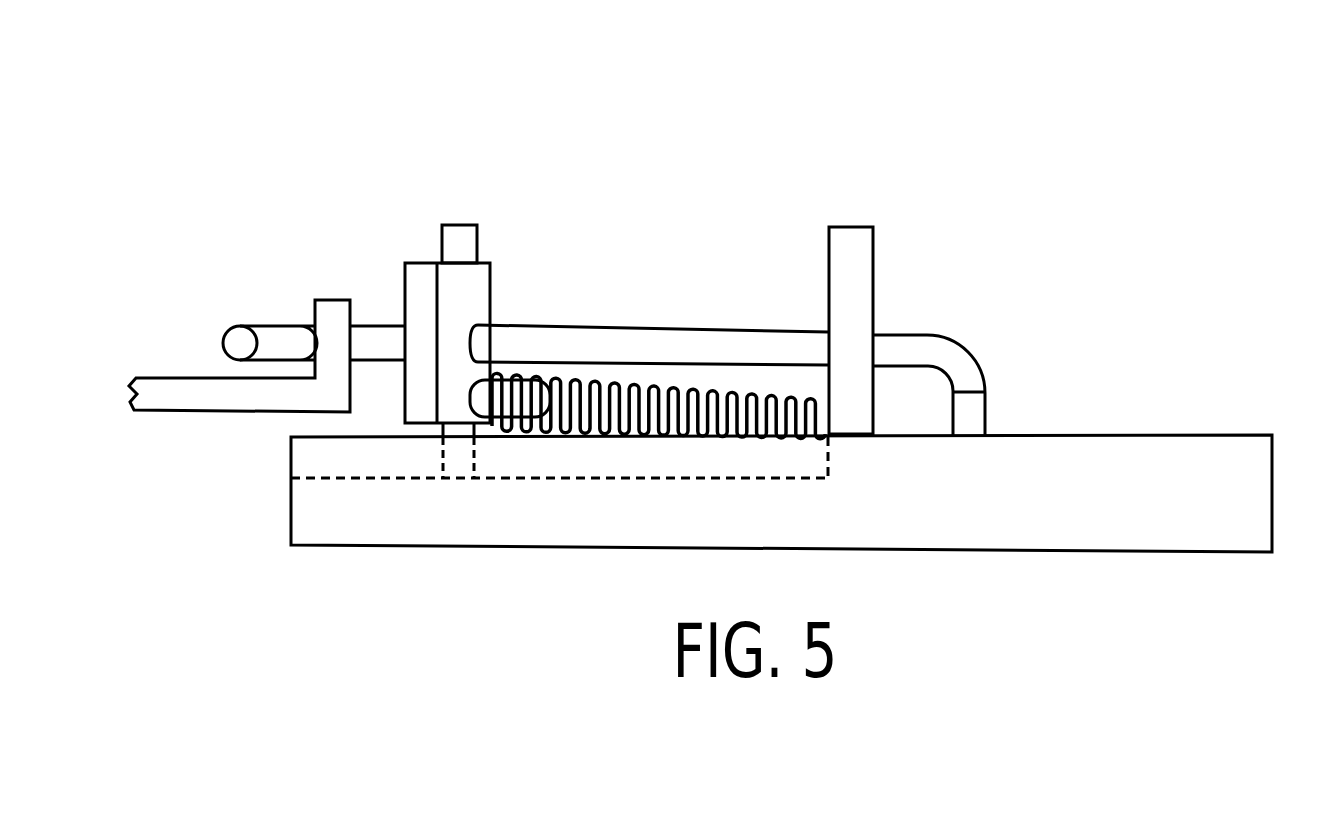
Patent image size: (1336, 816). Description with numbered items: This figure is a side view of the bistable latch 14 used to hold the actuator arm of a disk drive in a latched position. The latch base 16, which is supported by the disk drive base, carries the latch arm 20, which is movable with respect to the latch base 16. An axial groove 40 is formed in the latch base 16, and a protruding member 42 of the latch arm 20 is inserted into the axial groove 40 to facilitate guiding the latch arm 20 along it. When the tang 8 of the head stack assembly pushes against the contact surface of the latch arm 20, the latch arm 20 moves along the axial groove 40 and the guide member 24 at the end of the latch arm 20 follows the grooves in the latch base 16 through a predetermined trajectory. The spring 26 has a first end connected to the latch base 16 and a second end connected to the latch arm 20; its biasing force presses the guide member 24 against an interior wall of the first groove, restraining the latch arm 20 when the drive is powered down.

The tang 8 is at (184, 412).
The bistable latch 14 is at (288, 146).
The latch base 16 is at (1123, 435).
The latch arm 20 is at (627, 328).
The guide member 24 is at (977, 404).
The spring 26 is at (698, 384).
The axial groove 40 is at (634, 463).
The protruding member 42 is at (459, 462).